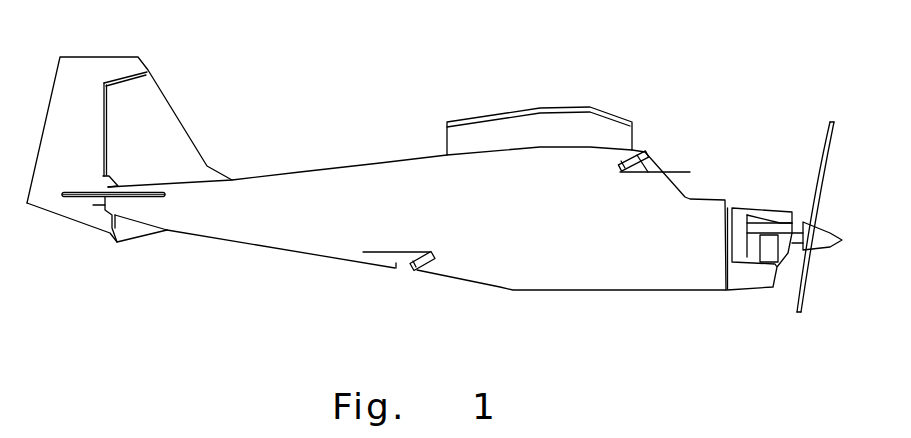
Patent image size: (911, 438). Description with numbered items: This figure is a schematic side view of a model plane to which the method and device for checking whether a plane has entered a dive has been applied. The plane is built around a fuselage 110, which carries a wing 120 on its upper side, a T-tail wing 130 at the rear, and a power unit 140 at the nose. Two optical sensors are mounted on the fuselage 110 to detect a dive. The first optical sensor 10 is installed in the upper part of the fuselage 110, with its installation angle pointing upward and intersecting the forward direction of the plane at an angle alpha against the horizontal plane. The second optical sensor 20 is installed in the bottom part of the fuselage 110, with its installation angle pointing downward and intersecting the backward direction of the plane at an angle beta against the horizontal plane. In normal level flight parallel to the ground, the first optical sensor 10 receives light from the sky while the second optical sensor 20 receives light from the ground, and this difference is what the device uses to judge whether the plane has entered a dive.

The fuselage 110 is at (392, 188).
The wing 120 is at (502, 132).
The T-tail wing 130 is at (107, 185).
The power unit 140 is at (738, 240).
The first optical sensor 10 is at (634, 158).
The second optical sensor 20 is at (413, 253).